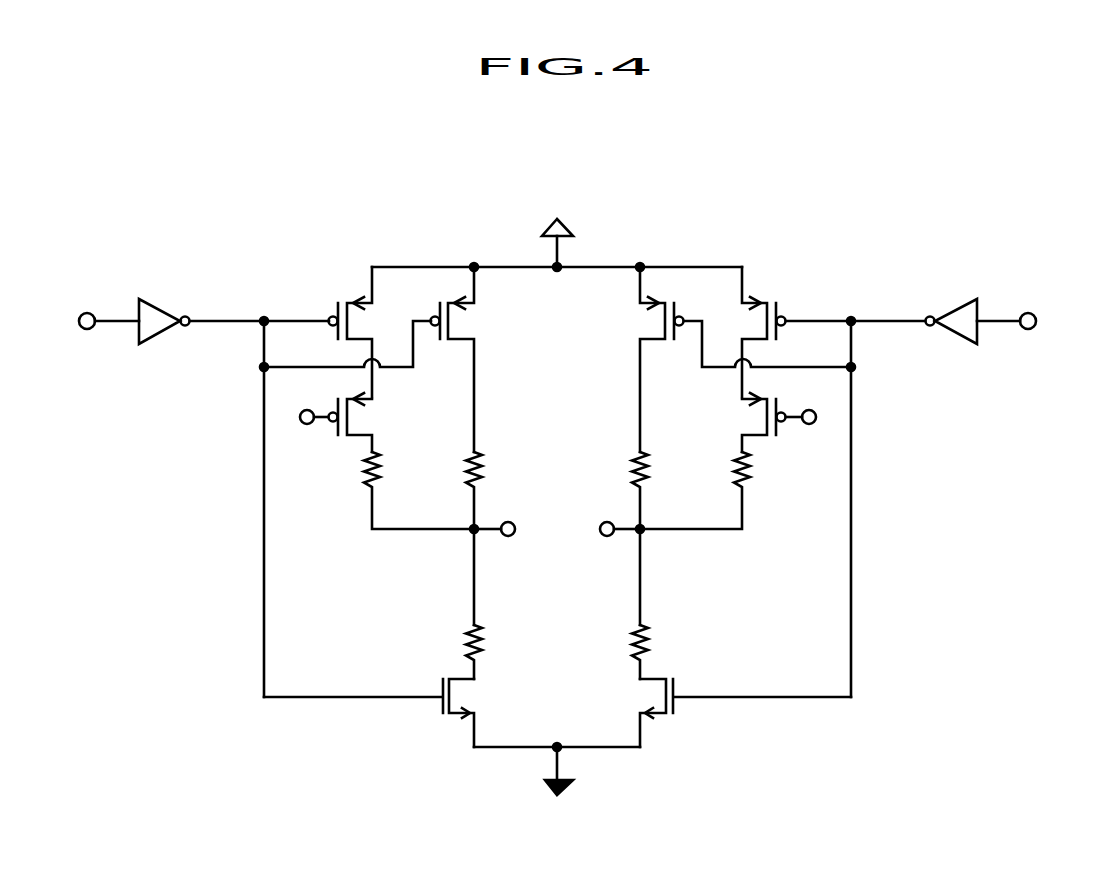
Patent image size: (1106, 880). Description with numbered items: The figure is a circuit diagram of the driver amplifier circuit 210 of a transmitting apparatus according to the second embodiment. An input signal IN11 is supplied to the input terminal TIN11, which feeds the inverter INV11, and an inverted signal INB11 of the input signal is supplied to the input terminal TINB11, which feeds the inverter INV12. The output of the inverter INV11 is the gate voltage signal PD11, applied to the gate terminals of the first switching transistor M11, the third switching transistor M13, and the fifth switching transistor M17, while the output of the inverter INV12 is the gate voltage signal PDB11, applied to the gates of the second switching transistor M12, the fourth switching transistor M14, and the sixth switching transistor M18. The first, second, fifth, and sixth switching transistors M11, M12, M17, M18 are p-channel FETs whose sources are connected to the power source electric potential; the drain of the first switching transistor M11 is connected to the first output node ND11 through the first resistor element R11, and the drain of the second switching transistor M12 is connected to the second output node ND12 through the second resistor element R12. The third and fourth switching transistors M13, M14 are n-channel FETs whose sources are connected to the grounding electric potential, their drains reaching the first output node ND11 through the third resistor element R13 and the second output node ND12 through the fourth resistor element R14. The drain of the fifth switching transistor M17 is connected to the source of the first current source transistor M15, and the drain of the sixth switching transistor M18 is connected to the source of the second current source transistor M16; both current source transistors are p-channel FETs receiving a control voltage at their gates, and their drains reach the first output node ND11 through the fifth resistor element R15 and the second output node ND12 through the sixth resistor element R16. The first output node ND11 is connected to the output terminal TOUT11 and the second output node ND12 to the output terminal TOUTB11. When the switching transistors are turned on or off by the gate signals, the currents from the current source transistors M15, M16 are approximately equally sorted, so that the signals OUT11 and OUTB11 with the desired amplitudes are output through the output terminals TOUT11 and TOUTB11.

The driver amplifier circuit 210 is at (587, 142).
The first switching transistor M11 is at (463, 320).
The second switching transistor M12 is at (656, 320).
The third switching transistor M13 is at (462, 698).
The fourth switching transistor M14 is at (658, 698).
The first current source transistor M15 is at (360, 419).
The second current source transistor M16 is at (757, 415).
The fifth switching transistor M17 is at (360, 322).
The sixth switching transistor M18 is at (755, 320).
The first resistor element R11 is at (502, 538).
The second resistor element R12 is at (614, 538).
The third resistor element R13 is at (501, 652).
The fourth resistor element R14 is at (615, 652).
The fifth resistor element R15 is at (419, 490).
The sixth resistor element R16 is at (695, 490).
The inverter INV11 is at (162, 303).
The inverter INV12 is at (952, 305).
The input signal IN11 is at (100, 306).
The inverted signal INB11 is at (1019, 306).
The input terminal TIN11 is at (87, 330).
The input terminal TINB11 is at (1028, 330).
The gate voltage signal PD11 is at (259, 307).
The gate voltage signal PDB11 is at (859, 307).
The first output node ND11 is at (471, 533).
The second output node ND12 is at (644, 526).
The output signal OUT11 is at (517, 545).
The output signal OUTB11 is at (592, 515).
The output terminal TOUT11 is at (503, 524).
The output terminal TOUTB11 is at (609, 537).